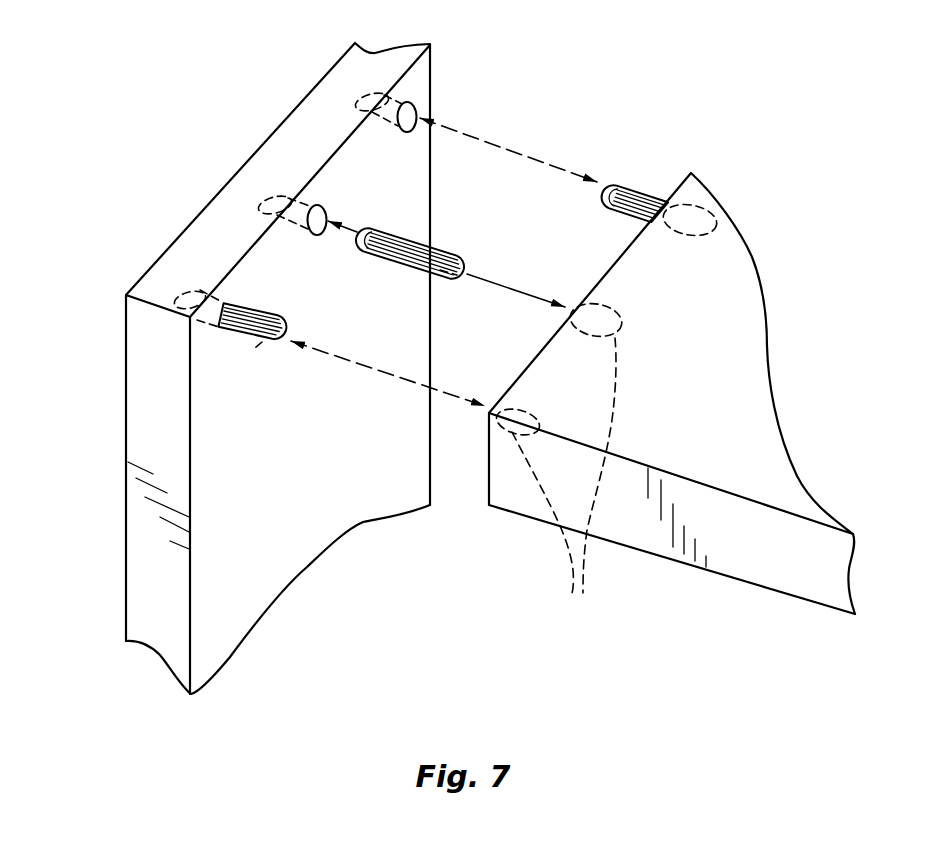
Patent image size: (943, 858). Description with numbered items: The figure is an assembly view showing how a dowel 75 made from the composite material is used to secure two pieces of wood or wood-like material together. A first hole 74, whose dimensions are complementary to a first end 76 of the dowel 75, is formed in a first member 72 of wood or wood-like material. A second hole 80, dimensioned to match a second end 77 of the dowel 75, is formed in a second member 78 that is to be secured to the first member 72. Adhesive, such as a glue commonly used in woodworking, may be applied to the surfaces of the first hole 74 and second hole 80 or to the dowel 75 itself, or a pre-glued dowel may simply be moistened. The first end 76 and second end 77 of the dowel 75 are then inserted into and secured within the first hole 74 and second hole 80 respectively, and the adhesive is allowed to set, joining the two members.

The first member 72 is at (160, 421).
The first hole 74 is at (353, 103).
The dowel 75 is at (420, 247).
The first end 76 is at (367, 253).
The second end 77 is at (457, 287).
The second member 78 is at (686, 372).
The second hole 80 is at (564, 483).